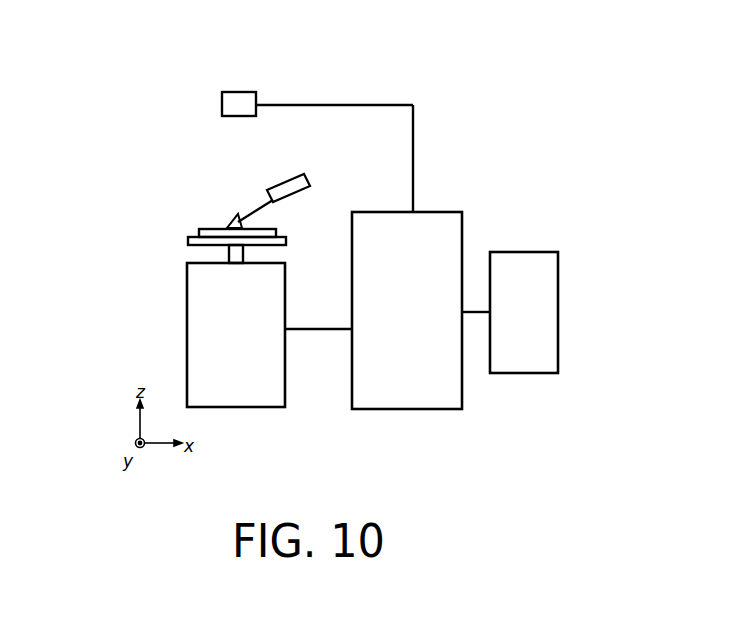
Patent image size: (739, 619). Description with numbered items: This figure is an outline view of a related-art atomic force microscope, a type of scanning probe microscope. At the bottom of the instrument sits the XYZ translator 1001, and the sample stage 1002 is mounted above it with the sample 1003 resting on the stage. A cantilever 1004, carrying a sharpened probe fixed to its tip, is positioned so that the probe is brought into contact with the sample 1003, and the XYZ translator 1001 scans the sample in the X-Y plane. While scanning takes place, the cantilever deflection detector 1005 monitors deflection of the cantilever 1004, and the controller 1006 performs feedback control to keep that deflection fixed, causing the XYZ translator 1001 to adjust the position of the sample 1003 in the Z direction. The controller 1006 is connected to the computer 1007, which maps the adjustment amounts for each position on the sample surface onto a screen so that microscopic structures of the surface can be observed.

The XYZ translator 1001 is at (200, 353).
The sample stage 1002 is at (188, 243).
The sample 1003 is at (199, 230).
The cantilever 1004 is at (234, 217).
The cantilever deflection detector 1005 is at (243, 92).
The controller 1006 is at (398, 410).
The computer 1007 is at (523, 373).